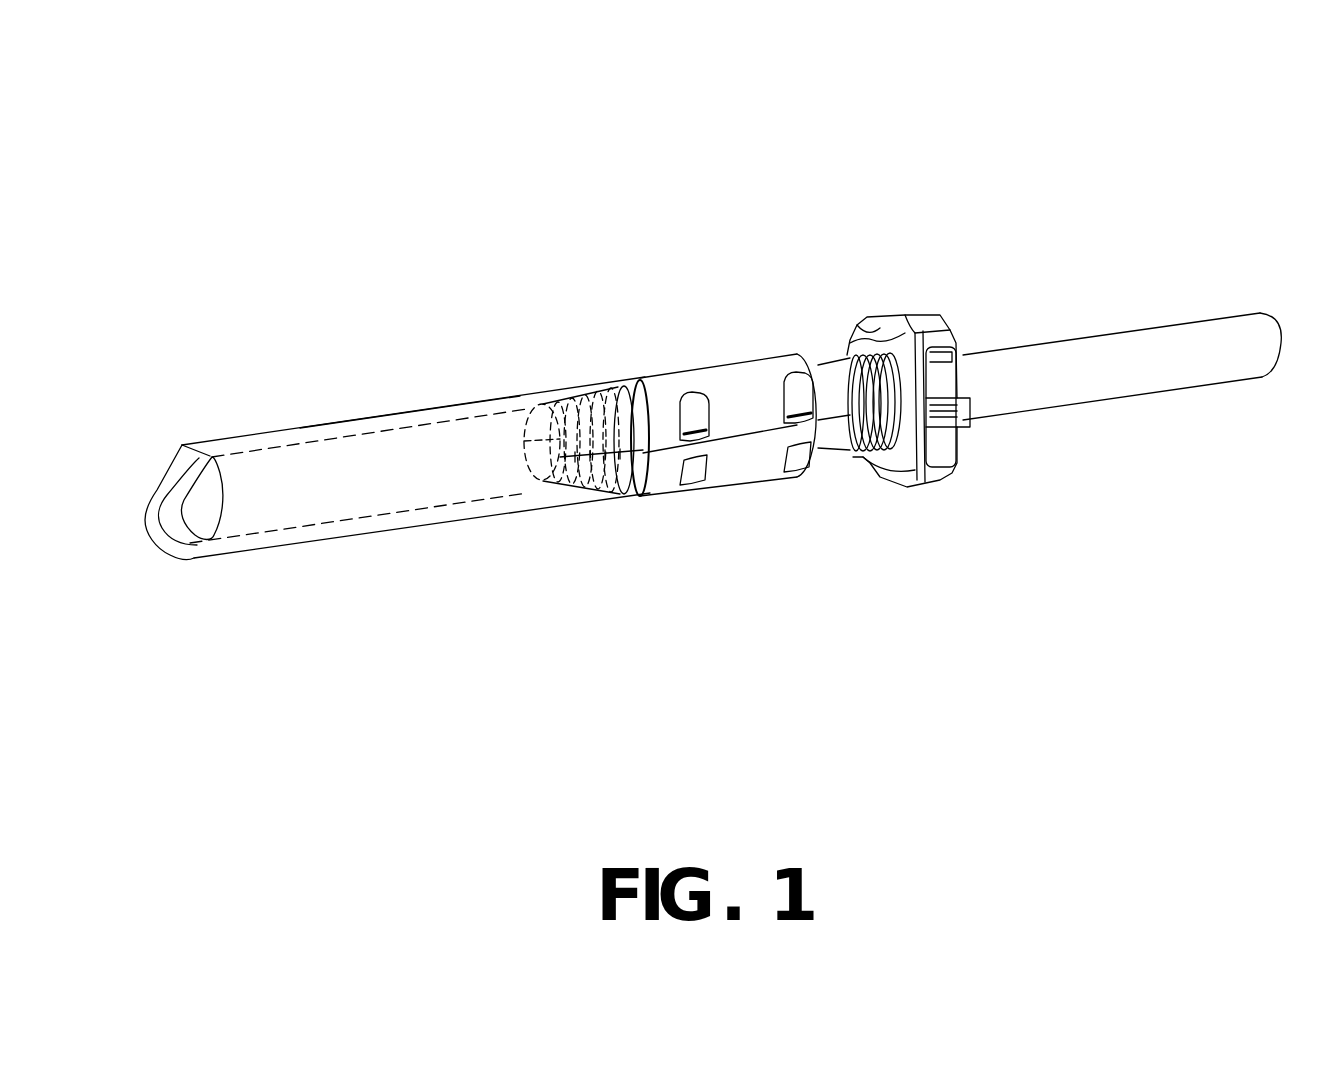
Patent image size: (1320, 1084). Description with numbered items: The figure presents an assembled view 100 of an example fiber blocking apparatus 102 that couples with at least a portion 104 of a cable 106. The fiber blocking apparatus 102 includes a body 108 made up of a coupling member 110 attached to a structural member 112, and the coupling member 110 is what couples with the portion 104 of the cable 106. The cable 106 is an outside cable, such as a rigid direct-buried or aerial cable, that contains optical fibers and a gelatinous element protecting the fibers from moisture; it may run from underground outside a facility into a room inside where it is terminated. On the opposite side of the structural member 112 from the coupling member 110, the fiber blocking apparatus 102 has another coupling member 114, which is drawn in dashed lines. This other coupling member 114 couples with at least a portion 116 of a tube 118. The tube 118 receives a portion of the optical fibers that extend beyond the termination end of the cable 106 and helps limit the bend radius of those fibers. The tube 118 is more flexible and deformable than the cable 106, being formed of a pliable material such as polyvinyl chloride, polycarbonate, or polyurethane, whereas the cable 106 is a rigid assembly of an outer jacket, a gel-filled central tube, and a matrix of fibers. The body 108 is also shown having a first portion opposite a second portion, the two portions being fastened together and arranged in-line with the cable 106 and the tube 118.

The assembled view 100 is at (326, 150).
The fiber blocking apparatus 102 is at (375, 495).
The portion of the cable 104 is at (965, 335).
The cable 106 is at (1217, 317).
The body 108 is at (743, 426).
The coupling member 110 is at (970, 447).
The structural member 112 is at (744, 440).
The other coupling member 114 is at (523, 517).
The portion of the tube 116 is at (526, 393).
The tube 118 is at (214, 440).